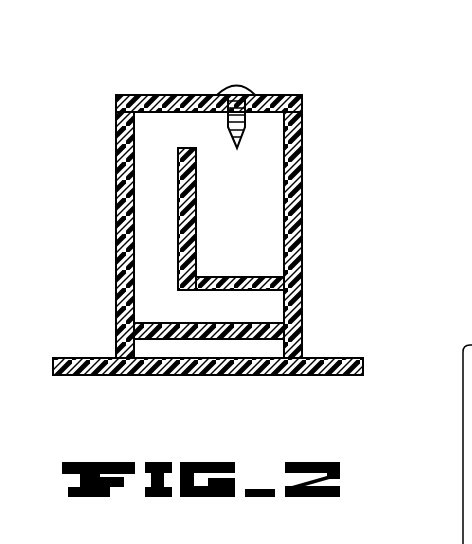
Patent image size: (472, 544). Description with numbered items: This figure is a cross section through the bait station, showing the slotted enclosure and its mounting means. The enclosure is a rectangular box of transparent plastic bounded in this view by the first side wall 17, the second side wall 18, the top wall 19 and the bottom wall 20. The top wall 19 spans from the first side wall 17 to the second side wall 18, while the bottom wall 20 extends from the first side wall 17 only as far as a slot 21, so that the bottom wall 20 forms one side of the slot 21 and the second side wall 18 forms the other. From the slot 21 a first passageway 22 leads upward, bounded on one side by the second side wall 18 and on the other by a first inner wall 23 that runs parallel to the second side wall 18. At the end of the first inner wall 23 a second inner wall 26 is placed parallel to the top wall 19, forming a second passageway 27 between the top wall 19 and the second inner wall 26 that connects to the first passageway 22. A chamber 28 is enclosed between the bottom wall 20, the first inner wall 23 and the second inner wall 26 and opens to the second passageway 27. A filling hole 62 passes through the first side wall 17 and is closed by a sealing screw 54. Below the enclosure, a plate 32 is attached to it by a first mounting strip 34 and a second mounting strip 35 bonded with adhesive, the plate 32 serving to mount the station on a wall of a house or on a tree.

The first side wall 17 is at (168, 93).
The second side wall 18 is at (162, 337).
The top wall 19 is at (123, 213).
The bottom wall 20 is at (291, 140).
The slot 21 is at (290, 313).
The first passageway 22 is at (218, 310).
The first inner wall 23 is at (260, 278).
The second inner wall 26 is at (186, 231).
The second passageway 27 is at (148, 192).
The chamber 28 is at (253, 200).
The plate 32 is at (365, 367).
The first mounting strip 34 is at (118, 343).
The second mounting strip 35 is at (300, 342).
The sealing screw 54 is at (248, 88).
The filling hole 62 is at (237, 95).